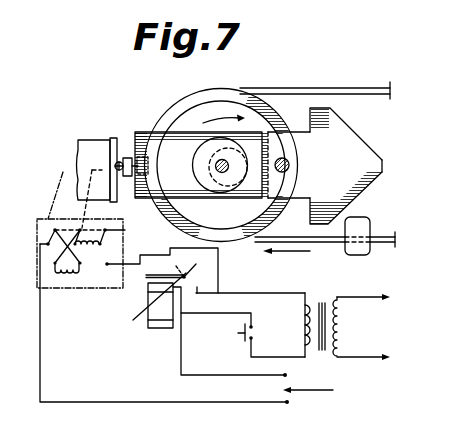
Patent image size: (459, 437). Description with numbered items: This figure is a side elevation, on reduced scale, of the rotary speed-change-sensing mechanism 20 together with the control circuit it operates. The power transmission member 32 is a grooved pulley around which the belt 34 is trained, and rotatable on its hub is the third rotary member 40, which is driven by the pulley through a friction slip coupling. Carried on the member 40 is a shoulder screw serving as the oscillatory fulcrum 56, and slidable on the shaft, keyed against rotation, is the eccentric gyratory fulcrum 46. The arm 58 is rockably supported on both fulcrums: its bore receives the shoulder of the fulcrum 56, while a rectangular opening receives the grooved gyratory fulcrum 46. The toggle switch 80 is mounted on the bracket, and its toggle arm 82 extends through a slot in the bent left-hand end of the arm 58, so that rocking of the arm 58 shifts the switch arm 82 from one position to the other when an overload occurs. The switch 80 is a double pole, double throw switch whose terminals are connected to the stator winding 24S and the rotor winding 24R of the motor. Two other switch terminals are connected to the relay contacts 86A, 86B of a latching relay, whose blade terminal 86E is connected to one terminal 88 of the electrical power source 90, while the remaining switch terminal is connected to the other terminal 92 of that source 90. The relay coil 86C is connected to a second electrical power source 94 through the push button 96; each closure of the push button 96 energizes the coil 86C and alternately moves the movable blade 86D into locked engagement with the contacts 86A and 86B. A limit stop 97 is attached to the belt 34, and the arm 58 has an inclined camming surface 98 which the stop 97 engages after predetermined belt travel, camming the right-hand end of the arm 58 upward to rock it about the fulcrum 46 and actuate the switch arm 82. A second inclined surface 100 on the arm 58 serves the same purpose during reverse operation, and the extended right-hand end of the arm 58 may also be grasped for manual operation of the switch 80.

The rotary speed-change-sensing mechanism 20 is at (285, 84).
The rotor winding 24R is at (109, 233).
The stator winding 24S is at (60, 284).
The power transmission member 32 is at (219, 90).
The belt 34 is at (360, 88).
The third rotary member 40 is at (185, 118).
The gyratory fulcrum 46 is at (226, 184).
The oscillatory fulcrum 56 is at (289, 165).
The arm 58 is at (384, 171).
The toggle switch 80 is at (76, 163).
The toggle arm 82 is at (138, 156).
The relay contact 86A is at (200, 264).
The relay contact 86B is at (201, 285).
The relay coil 86C is at (151, 327).
The movable blade 86D is at (169, 269).
The blade terminal 86E is at (148, 302).
The terminal 88 is at (290, 376).
The electrical power source 90 is at (321, 392).
The terminal 92 is at (290, 403).
The electrical power source 94 is at (323, 300).
The push button 96 is at (259, 332).
The limit stop 97 is at (371, 224).
The inclined camming surface 98 is at (367, 199).
The second inclined surface 100 is at (365, 132).